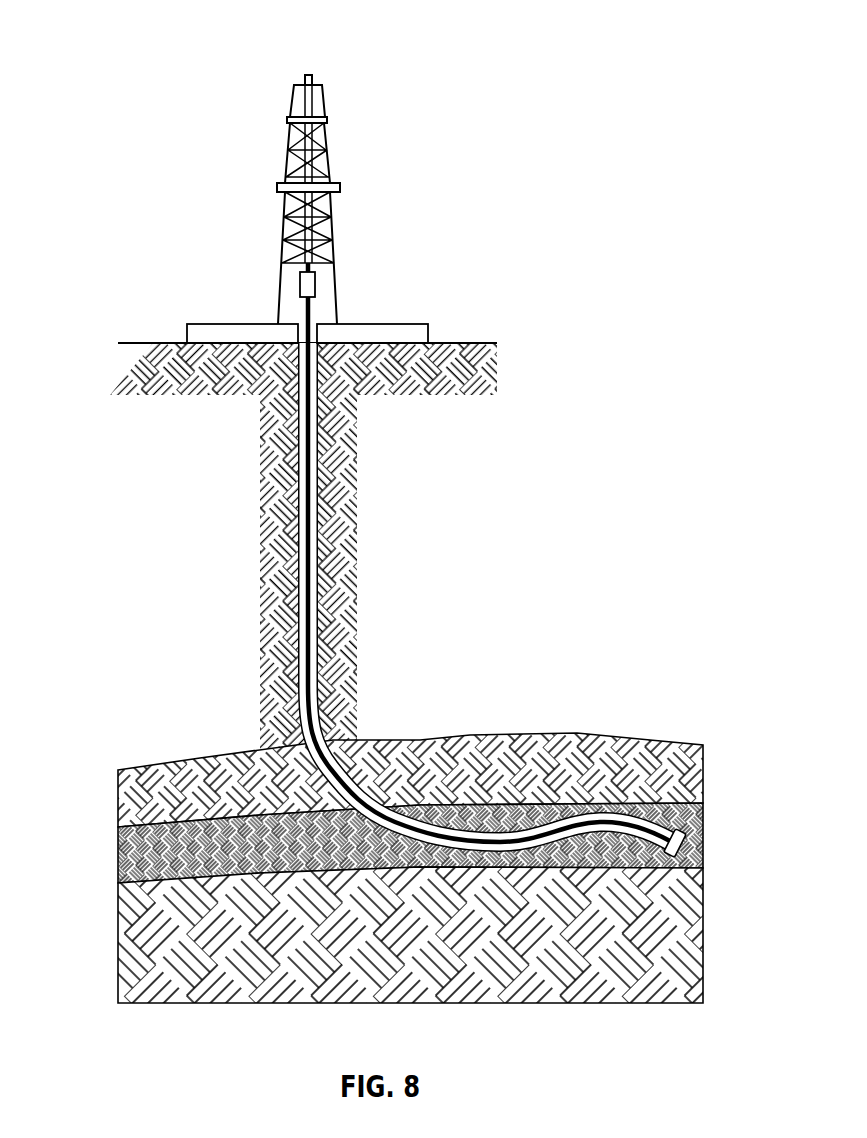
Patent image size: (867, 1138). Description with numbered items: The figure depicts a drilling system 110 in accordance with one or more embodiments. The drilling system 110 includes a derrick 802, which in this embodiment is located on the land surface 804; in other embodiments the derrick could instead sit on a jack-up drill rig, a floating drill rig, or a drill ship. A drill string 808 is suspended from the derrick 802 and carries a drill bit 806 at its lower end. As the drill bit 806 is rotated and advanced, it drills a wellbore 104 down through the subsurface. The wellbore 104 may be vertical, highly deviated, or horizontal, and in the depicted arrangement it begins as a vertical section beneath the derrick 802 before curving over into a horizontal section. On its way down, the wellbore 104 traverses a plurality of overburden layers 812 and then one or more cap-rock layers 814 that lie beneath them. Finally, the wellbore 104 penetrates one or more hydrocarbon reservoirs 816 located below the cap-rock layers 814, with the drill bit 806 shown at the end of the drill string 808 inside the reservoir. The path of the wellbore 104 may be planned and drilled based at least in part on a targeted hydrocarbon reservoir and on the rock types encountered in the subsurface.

The drilling system 110 is at (309, 182).
The derrick 802 is at (333, 213).
The drill string 808 is at (312, 312).
The land surface 804 is at (470, 342).
The wellbore 104 is at (290, 482).
The overburden layers 812 is at (345, 525).
The drill bit 806 is at (683, 826).
The cap-rock layers 814 is at (120, 793).
The hydrocarbon reservoirs 816 is at (120, 862).